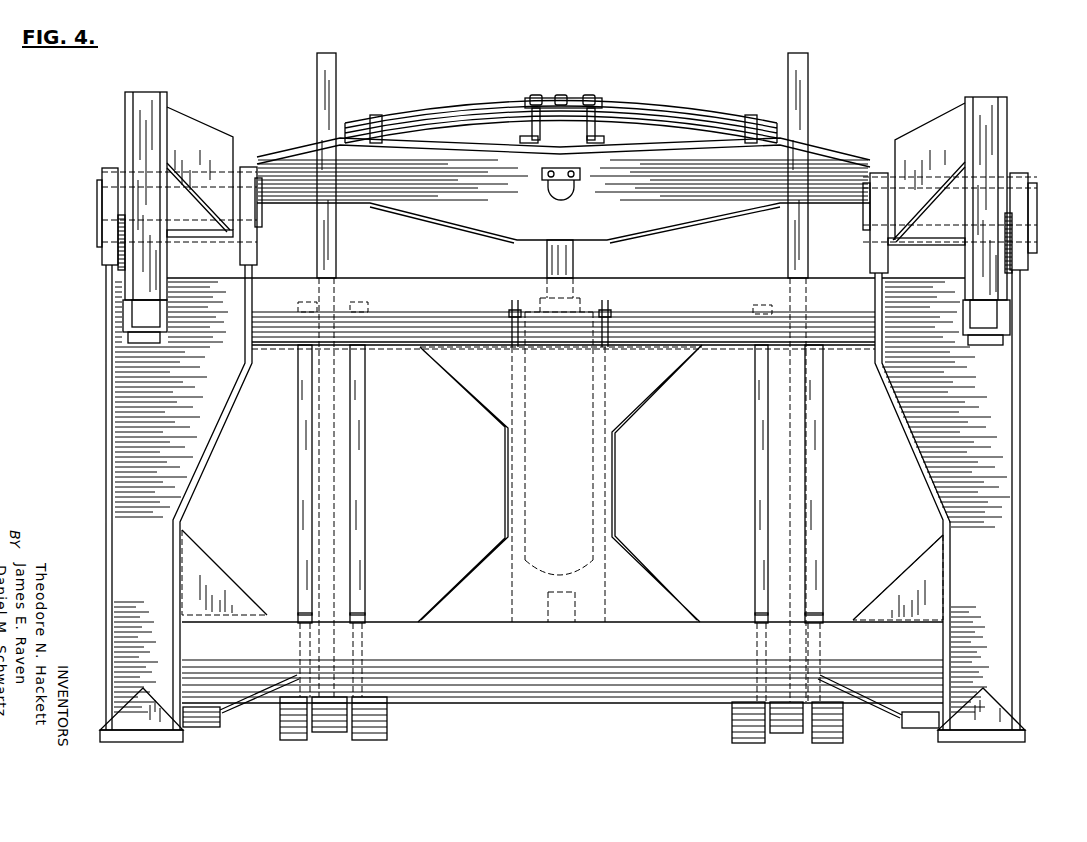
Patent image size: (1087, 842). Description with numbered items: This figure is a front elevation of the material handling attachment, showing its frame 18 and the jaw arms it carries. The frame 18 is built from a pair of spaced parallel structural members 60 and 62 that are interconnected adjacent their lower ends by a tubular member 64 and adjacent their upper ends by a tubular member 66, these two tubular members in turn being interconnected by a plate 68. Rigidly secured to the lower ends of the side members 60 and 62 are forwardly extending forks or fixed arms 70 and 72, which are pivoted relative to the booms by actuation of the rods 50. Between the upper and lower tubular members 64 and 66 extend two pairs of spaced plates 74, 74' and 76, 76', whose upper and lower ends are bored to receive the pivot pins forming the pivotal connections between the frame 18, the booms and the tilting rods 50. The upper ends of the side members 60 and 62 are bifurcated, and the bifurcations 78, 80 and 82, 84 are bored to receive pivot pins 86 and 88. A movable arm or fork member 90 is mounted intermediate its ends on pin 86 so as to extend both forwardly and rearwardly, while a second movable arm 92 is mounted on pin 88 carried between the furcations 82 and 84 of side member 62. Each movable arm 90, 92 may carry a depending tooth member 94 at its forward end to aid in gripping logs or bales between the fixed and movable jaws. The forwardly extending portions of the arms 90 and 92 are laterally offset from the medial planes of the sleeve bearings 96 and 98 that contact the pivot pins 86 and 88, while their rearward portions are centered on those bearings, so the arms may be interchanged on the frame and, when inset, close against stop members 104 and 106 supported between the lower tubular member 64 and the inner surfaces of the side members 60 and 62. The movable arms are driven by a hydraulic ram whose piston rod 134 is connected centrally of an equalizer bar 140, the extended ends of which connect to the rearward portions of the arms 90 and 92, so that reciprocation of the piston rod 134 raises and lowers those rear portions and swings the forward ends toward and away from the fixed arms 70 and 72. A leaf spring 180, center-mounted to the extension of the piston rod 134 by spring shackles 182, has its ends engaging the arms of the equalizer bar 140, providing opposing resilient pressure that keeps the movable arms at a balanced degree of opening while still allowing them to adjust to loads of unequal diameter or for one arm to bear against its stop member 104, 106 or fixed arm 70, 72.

The frame 18 is at (92, 447).
The tilting rods 50 is at (336, 84).
The structural member 60 is at (1000, 473).
The structural member 62 is at (108, 388).
The lower tubular member 64 is at (434, 650).
The upper tubular member 66 is at (409, 303).
The plate 68 is at (463, 580).
The fixed arm 70 is at (1000, 730).
The fixed arm 72 is at (143, 705).
The plate 74 is at (733, 524).
The plate 74' is at (839, 544).
The plate 76 is at (380, 521).
The plate 76' is at (281, 521).
The bifurcation 78 is at (1018, 180).
The bifurcation 80 is at (877, 175).
The bifurcation 82 is at (248, 182).
The bifurcation 84 is at (110, 177).
The pivot pin 86 is at (1028, 198).
The pivot pin 88 is at (120, 217).
The movable arm 90 is at (978, 95).
The movable arm 92 is at (118, 100).
The tooth member 94 is at (145, 335).
The sleeve bearing 96 is at (912, 238).
The sleeve bearing 98 is at (214, 232).
The stop member 104 is at (915, 722).
The stop member 106 is at (212, 720).
The piston rod 134 is at (570, 267).
The equalizer bar 140 is at (664, 217).
The leaf spring 180 is at (497, 104).
The spring shackles 182 is at (590, 100).